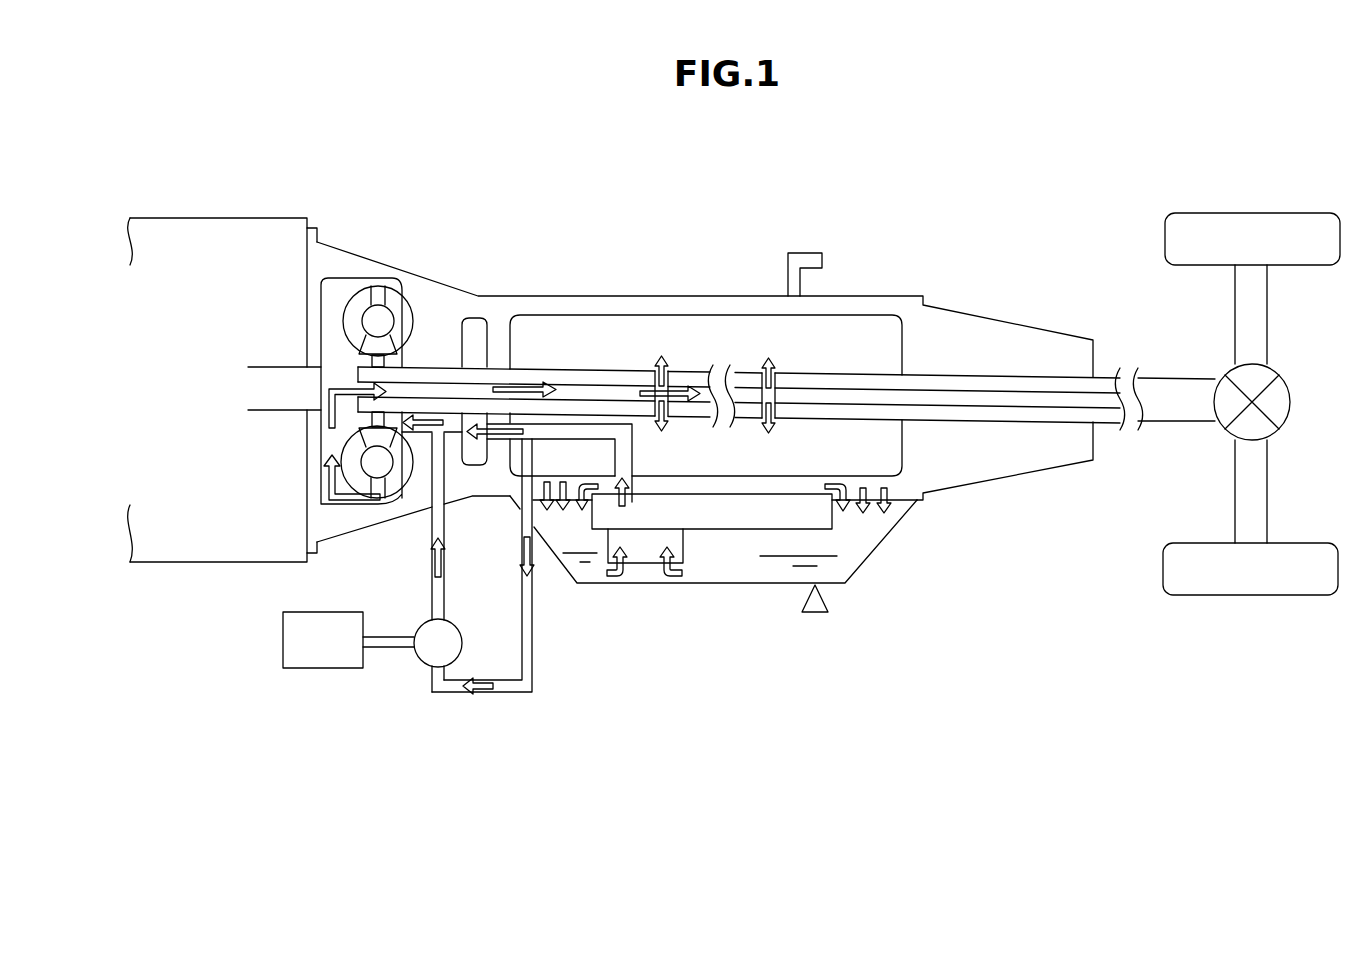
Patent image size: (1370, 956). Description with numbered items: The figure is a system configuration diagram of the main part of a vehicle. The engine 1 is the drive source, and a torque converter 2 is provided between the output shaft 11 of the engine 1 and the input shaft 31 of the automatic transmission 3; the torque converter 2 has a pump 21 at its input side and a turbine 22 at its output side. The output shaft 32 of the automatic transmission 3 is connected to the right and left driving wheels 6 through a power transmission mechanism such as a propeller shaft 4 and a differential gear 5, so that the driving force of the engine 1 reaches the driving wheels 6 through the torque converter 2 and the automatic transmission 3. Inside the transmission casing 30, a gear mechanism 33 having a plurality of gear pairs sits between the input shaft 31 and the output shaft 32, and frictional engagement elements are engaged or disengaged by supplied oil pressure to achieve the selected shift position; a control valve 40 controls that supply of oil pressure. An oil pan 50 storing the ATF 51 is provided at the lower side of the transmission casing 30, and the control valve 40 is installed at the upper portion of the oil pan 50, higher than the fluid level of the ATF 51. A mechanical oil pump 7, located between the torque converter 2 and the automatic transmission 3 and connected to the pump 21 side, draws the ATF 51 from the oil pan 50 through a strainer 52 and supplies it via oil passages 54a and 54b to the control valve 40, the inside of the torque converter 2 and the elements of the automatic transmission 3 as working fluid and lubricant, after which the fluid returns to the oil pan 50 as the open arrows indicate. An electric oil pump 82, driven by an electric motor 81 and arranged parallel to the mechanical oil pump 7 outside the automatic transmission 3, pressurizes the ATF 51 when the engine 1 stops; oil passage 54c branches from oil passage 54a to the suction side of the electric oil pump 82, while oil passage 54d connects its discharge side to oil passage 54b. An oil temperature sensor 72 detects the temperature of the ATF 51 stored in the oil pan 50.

The engine 1 is at (204, 227).
The torque converter 2 is at (381, 354).
The automatic transmission 3 is at (585, 262).
The propeller shaft 4 is at (1182, 378).
The differential gear 5 is at (1290, 402).
The driving wheels 6 is at (1165, 236).
The mechanical oil pump 7 is at (478, 318).
The output shaft 11 is at (265, 365).
The pump 21 is at (398, 303).
The turbine 22 is at (350, 306).
The transmission casing 30 is at (877, 296).
The input shaft 31 is at (547, 383).
The output shaft 32 is at (1007, 377).
The gear mechanism 33 is at (707, 315).
The control valve 40 is at (752, 530).
The oil pan 50 is at (553, 587).
The ATF 51 is at (848, 567).
The strainer 52 is at (684, 545).
The oil passage 54a is at (573, 423).
The oil passage 54b is at (433, 423).
The oil passage 54c is at (533, 684).
The oil passage 54d is at (432, 577).
The oil temperature sensor 72 is at (828, 602).
The electric motor 81 is at (283, 640).
The electric oil pump 82 is at (420, 661).